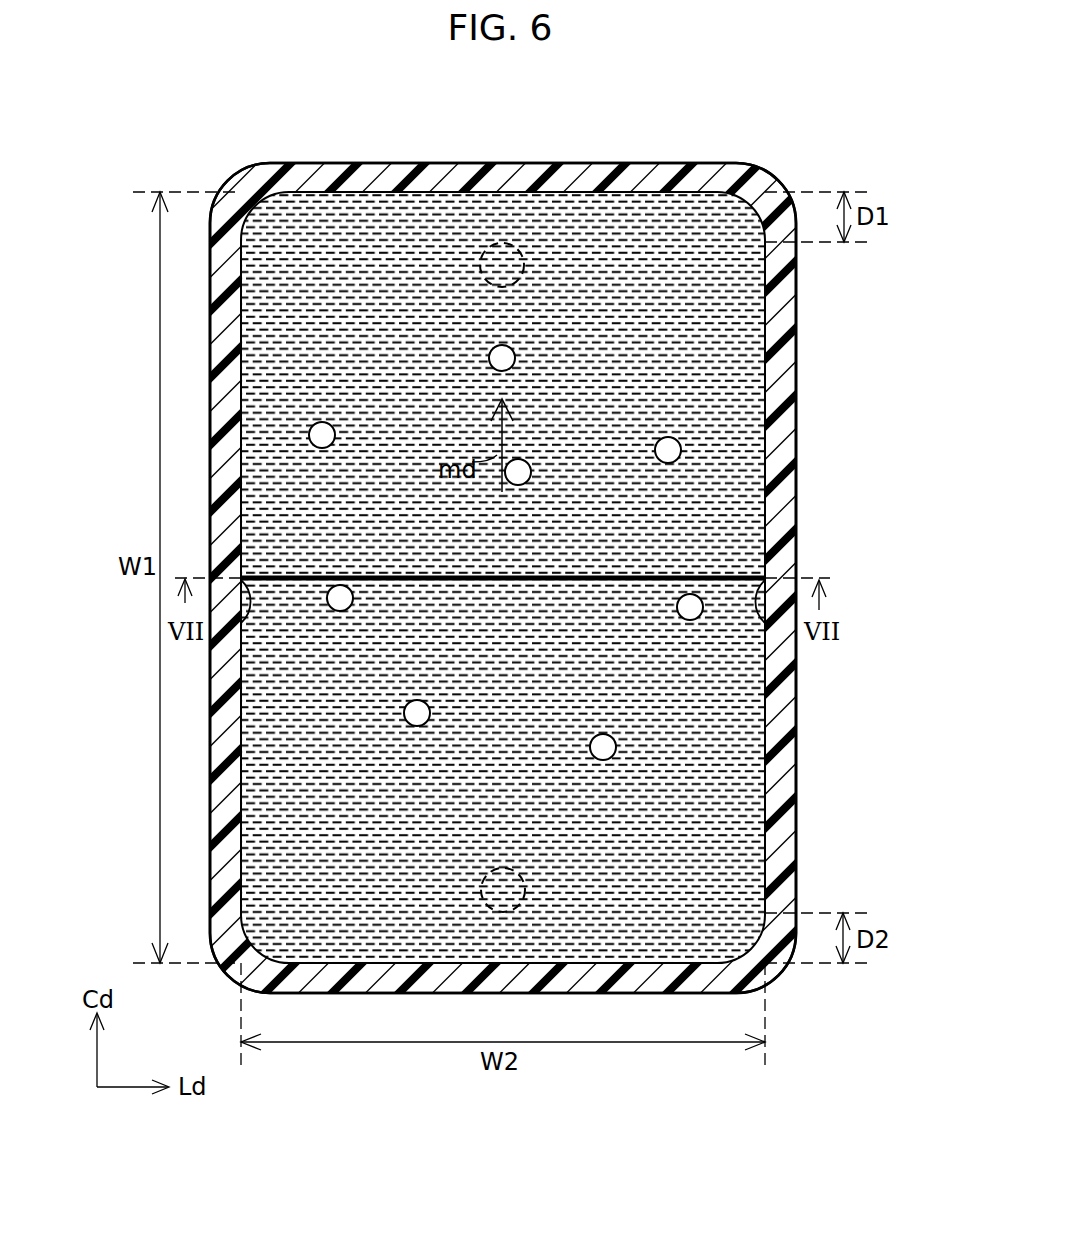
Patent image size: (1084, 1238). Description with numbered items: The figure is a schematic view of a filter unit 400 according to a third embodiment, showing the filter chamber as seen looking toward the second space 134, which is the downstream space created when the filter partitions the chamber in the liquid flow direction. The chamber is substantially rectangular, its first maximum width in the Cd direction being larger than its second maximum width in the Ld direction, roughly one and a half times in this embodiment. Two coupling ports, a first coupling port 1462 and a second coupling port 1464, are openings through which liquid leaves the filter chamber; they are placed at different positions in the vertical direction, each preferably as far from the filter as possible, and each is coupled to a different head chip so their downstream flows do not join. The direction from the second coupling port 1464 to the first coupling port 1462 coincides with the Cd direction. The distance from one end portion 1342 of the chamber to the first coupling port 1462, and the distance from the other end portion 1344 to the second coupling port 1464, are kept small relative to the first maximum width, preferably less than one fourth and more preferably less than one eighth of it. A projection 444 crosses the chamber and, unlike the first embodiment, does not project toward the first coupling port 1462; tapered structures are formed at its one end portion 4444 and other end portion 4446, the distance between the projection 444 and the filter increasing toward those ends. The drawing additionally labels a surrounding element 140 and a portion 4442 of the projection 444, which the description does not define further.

The filter unit 400 is at (143, 170).
The frame 140 is at (797, 372).
The second space 134 is at (518, 713).
The one end portion 1342 is at (560, 197).
The other end portion 1344 is at (645, 960).
The first coupling port 1462 is at (524, 272).
The second coupling port 1464 is at (525, 878).
The projection 444 is at (637, 576).
The partition rib 4442 is at (585, 562).
The one end portion 4444 is at (248, 622).
The other end portion 4446 is at (763, 582).